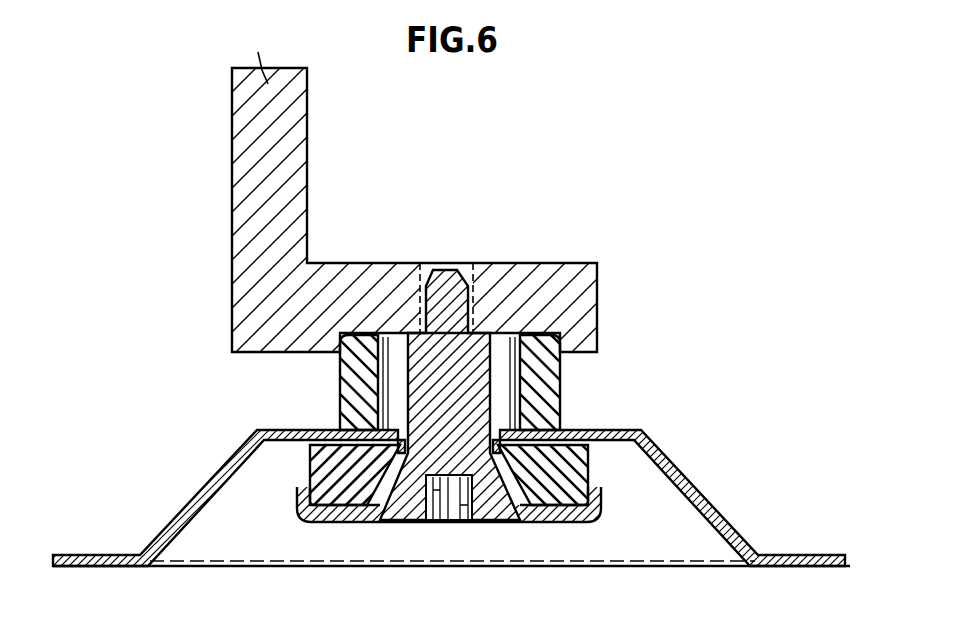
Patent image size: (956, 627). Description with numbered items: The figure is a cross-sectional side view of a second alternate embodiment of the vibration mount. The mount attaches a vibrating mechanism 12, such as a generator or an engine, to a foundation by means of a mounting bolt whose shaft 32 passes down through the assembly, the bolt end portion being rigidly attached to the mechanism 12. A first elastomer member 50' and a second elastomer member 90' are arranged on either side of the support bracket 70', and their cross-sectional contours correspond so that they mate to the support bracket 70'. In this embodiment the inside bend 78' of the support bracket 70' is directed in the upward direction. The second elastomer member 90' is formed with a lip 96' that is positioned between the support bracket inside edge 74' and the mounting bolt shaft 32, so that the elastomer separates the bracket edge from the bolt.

The mechanism 12 is at (232, 172).
The shaft 32 is at (490, 402).
The first elastomer member 50' is at (445, 382).
The support bracket 70' is at (478, 498).
The support bracket inside edge 74' is at (475, 527).
The inside bend 78' is at (516, 422).
The second elastomer member 90' is at (433, 487).
The lip 96' is at (449, 517).